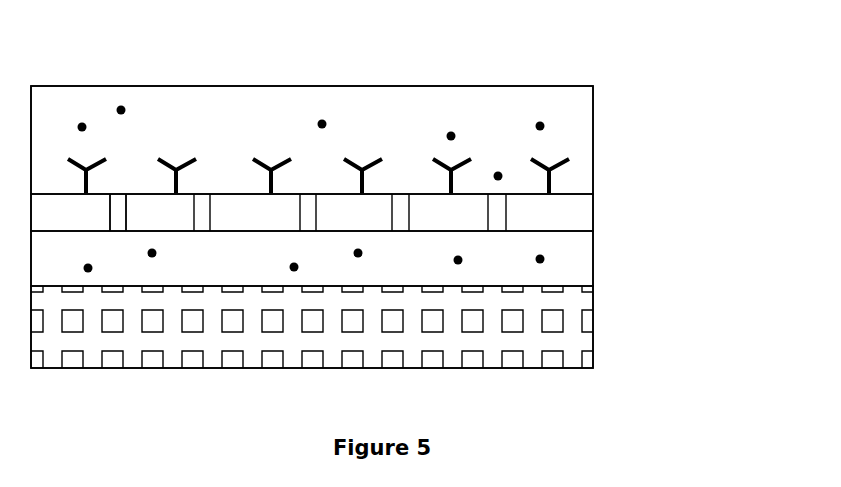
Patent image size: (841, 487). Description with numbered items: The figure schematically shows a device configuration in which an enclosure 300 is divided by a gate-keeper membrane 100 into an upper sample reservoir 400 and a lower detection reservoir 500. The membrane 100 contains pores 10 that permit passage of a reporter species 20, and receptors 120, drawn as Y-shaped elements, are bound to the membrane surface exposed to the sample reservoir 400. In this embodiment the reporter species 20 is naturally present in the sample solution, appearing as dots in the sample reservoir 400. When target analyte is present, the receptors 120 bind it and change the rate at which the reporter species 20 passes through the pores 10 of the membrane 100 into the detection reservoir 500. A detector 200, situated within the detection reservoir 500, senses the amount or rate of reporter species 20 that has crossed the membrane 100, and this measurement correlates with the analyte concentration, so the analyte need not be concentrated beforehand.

The enclosure 300 is at (284, 86).
The sample reservoir 400 is at (593, 130).
The gate-keeper membrane 100 is at (593, 215).
The pores 10 is at (116, 194).
The detection reservoir 500 is at (593, 263).
The detector 200 is at (593, 344).
The receptors 120 is at (195, 156).
The reporter species 20 is at (326, 121).